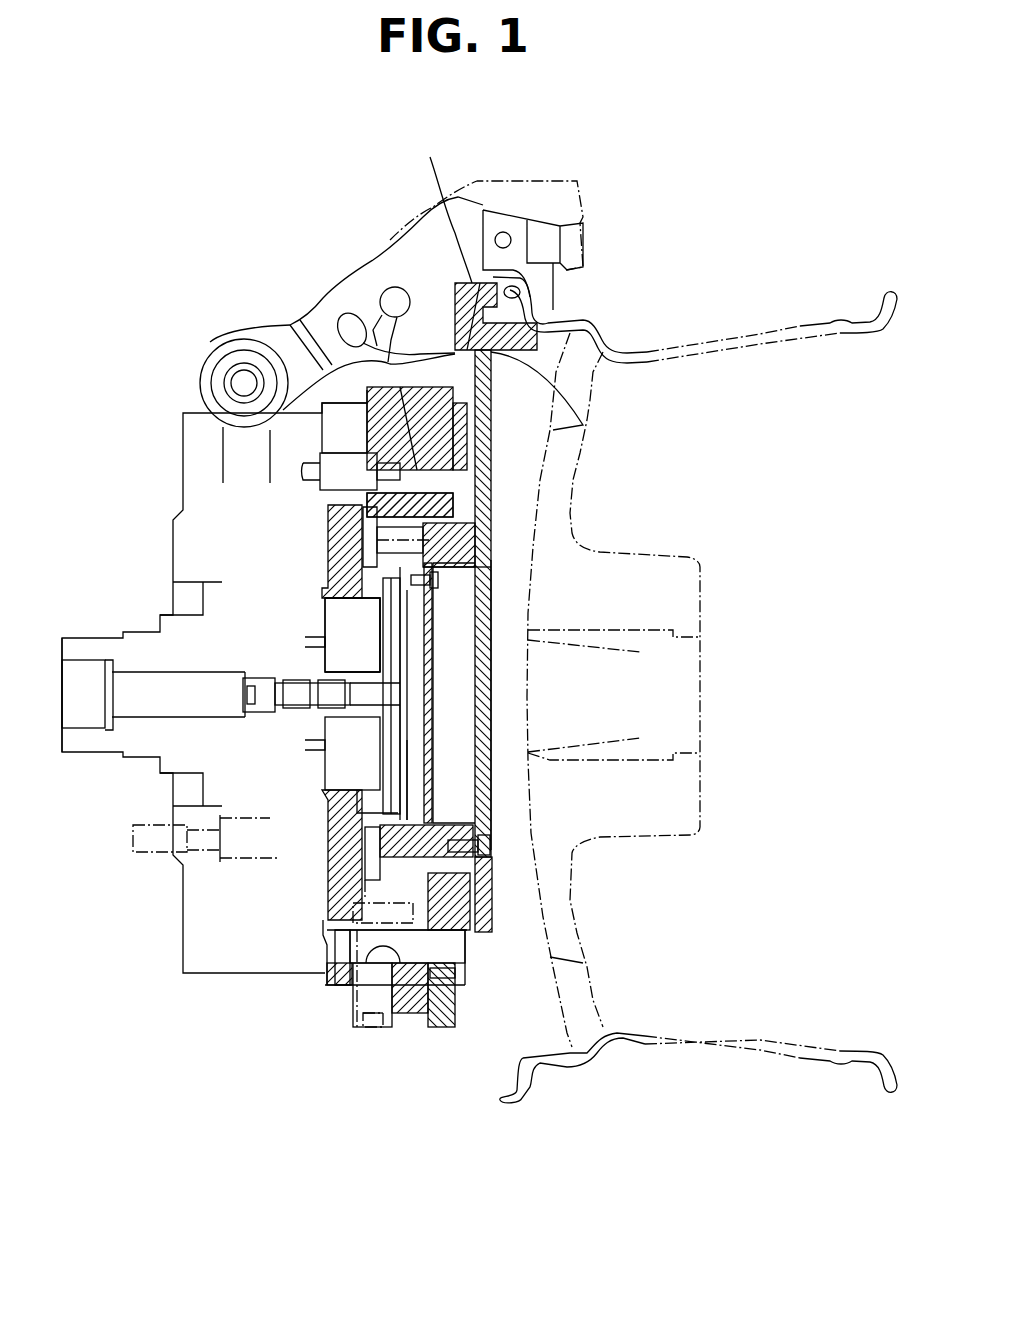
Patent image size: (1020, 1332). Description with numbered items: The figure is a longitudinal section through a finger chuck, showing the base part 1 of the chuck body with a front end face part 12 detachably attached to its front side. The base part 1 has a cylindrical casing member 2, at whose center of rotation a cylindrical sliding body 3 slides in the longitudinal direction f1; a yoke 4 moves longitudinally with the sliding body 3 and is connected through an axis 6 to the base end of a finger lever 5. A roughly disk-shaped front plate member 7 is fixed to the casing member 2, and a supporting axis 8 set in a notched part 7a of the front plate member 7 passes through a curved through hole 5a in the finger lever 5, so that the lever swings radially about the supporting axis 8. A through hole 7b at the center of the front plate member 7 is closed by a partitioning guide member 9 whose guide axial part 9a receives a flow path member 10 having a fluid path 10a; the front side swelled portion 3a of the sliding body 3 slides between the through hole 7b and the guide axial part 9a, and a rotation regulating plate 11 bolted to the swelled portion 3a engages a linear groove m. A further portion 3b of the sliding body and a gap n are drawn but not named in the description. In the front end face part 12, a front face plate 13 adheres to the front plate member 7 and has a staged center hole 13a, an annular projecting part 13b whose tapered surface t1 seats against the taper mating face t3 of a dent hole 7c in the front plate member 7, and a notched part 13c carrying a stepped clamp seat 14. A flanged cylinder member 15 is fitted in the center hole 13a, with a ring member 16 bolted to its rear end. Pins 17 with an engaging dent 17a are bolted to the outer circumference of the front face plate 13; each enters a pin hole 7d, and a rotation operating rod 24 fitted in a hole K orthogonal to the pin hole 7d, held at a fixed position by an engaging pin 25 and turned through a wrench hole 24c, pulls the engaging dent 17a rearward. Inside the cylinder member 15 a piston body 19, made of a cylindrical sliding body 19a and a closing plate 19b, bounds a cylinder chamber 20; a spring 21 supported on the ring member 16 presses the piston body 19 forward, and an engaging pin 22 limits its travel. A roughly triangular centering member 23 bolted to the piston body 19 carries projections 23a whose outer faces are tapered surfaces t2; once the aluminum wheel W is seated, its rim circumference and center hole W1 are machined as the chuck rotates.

The base part 1 is at (62, 1088).
The cylindrical casing member 2 is at (212, 967).
The cylindrical sliding body 3 is at (90, 645).
The front side swelled portion 3a is at (300, 790).
The axle flange 3b is at (133, 703).
The yoke 4 is at (240, 470).
The finger lever 5 is at (467, 220).
The curved through hole 5a is at (293, 320).
The axis 6 is at (240, 382).
The front plate member 7 is at (418, 423).
The notched part 7a is at (413, 360).
The through hole 7b is at (385, 752).
The dent hole 7c is at (330, 510).
The pin hole 7d is at (327, 937).
The supporting axis 8 is at (393, 290).
The partitioning guide member 9 is at (400, 616).
The guide axial part 9a is at (362, 668).
The flow path member 10 is at (262, 678).
The fluid path 10a is at (245, 693).
The rotation regulating plate 11 is at (333, 612).
The front end face part 12 is at (427, 1043).
The front face plate 13 is at (452, 1013).
The staged center hole 13a is at (493, 586).
The annular projecting part 13b is at (341, 320).
The notched part 13c is at (580, 427).
The clamp seat 14 is at (438, 206).
The flanged cylinder member 15 is at (467, 877).
The ring member 16 is at (367, 549).
The pin 17 is at (457, 950).
The engaging dent 17a is at (353, 1005).
The piston body 19 is at (440, 698).
The cylindrical sliding body 19a is at (455, 823).
The closing plate 19b is at (433, 640).
The cylinder chamber 20 is at (355, 810).
The spring 21 is at (377, 567).
The engaging pin 22 is at (327, 892).
The centering member 23 is at (497, 695).
The projection 23a is at (610, 345).
The rotation operating rod 24 is at (352, 1027).
The wrench hole 24c is at (377, 1030).
The engaging pin 25 is at (545, 937).
The hole K is at (372, 978).
The aluminum wheel W is at (790, 325).
The center hole W1 is at (625, 648).
The longitudinal direction f1 is at (70, 222).
The linear groove m is at (322, 601).
The gap n is at (88, 724).
The tapered surface t1 is at (343, 312).
The tapered surface t2 is at (537, 295).
The taper mating face t3 is at (480, 855).